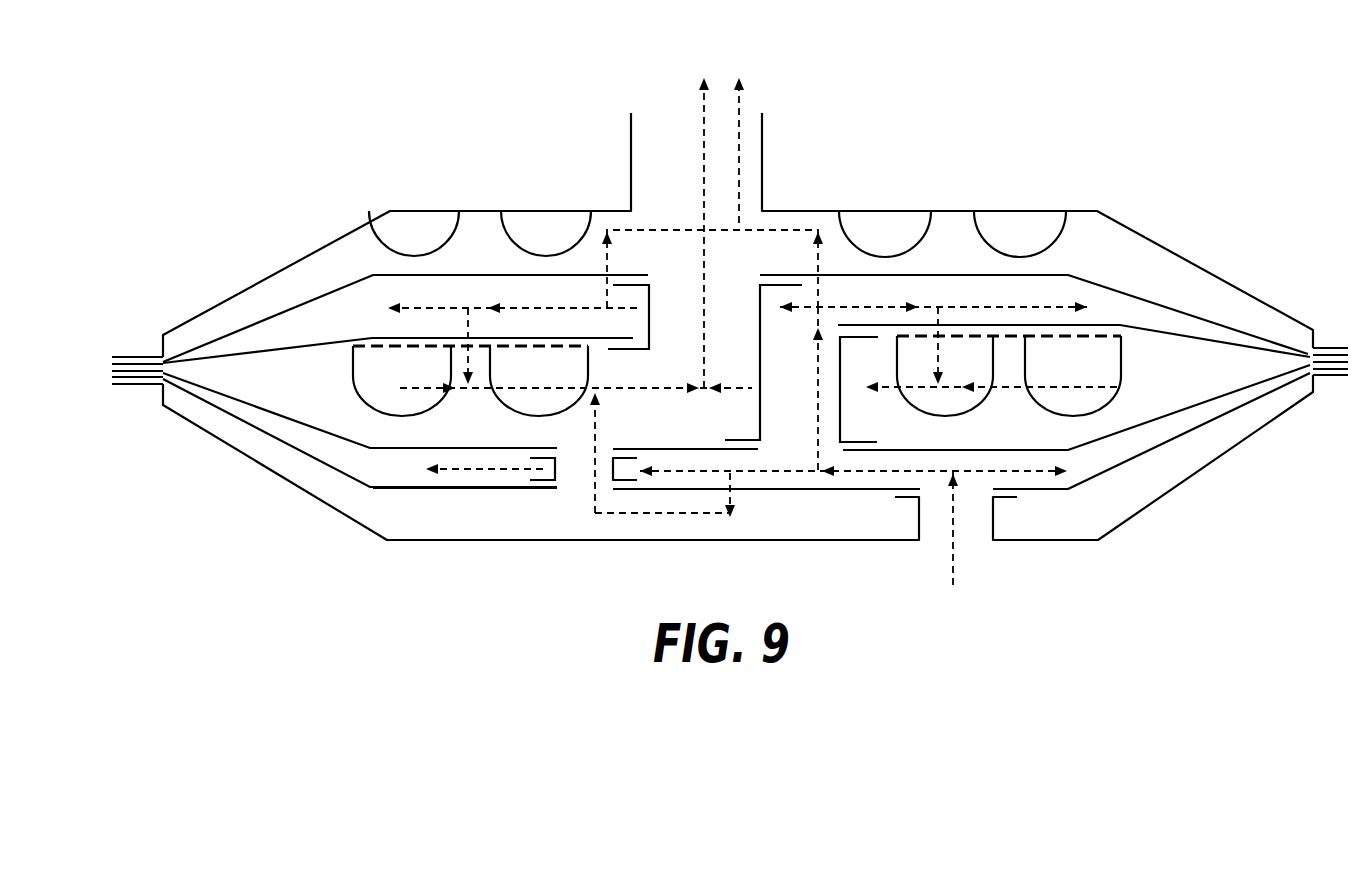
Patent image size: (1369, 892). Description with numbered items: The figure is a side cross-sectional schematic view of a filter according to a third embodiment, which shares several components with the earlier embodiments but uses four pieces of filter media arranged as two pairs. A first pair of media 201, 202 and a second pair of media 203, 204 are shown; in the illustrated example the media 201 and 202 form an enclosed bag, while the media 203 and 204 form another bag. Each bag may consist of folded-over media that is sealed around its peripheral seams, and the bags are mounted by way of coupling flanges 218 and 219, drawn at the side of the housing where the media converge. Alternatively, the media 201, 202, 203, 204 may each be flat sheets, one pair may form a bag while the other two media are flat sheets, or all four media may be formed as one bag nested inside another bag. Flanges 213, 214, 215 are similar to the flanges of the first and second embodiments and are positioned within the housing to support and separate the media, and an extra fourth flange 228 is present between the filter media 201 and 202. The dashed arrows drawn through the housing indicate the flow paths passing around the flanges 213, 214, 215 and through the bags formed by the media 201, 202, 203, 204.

The filter medium 201 is at (468, 488).
The filter medium 202 is at (402, 450).
The filter medium 203 is at (380, 337).
The filter medium 204 is at (465, 275).
The flange 213 is at (840, 360).
The flange 214 is at (762, 422).
The flange 215 is at (650, 305).
The coupling flange 218 is at (1333, 347).
The coupling flange 219 is at (1333, 378).
The lower member end cap 228 is at (555, 470).